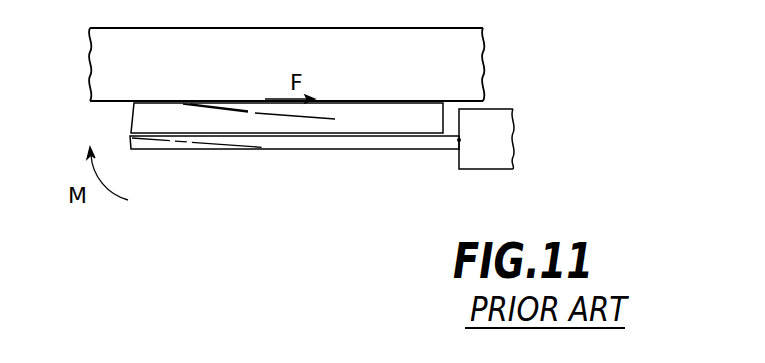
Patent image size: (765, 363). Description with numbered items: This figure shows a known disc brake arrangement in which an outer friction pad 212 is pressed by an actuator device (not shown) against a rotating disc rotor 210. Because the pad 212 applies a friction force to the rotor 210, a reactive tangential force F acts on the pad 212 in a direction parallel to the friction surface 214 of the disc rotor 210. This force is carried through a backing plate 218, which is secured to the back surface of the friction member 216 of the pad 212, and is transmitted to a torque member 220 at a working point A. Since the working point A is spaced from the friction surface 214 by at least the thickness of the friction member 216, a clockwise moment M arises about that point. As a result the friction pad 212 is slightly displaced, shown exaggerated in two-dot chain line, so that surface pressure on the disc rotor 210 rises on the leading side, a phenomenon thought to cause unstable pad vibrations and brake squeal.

The disc rotor 210 is at (473, 51).
The friction pad 212 is at (320, 149).
The friction surface 214 is at (386, 100).
The friction member 216 is at (229, 126).
The backing plate 218 is at (380, 142).
The torque member 220 is at (505, 155).